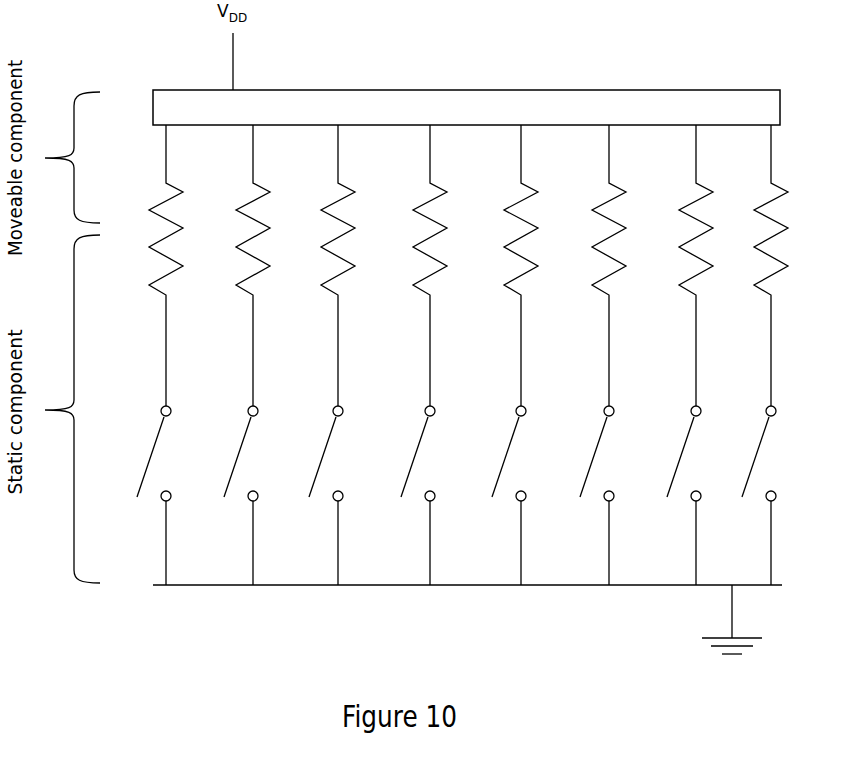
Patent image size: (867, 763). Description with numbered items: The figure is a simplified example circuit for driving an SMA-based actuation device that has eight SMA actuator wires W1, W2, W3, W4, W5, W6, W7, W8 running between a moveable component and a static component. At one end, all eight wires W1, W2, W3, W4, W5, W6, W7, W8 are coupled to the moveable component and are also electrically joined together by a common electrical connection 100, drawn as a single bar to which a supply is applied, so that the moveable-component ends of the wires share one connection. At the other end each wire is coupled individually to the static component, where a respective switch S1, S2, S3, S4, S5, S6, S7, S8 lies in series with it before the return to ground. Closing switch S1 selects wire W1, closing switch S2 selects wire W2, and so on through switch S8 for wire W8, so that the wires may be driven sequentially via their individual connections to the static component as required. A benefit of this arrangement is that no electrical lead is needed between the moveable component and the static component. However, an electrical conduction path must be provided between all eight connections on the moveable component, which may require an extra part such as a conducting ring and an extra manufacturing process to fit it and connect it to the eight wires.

The common electrical connection 100 is at (645, 90).
The SMA actuator wire W1 is at (146, 265).
The SMA actuator wire W2 is at (234, 265).
The SMA actuator wire W3 is at (319, 265).
The SMA actuator wire W4 is at (411, 265).
The SMA actuator wire W5 is at (502, 265).
The SMA actuator wire W6 is at (589, 265).
The SMA actuator wire W7 is at (675, 265).
The SMA actuator wire W8 is at (755, 265).
The switch S1 is at (141, 495).
The switch S2 is at (228, 495).
The switch S3 is at (313, 495).
The switch S4 is at (405, 495).
The switch S5 is at (496, 495).
The switch S6 is at (584, 495).
The switch S7 is at (671, 495).
The switch S8 is at (749, 495).